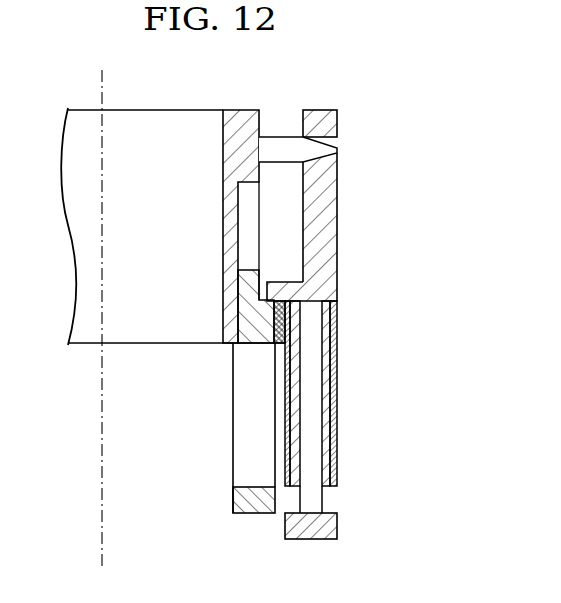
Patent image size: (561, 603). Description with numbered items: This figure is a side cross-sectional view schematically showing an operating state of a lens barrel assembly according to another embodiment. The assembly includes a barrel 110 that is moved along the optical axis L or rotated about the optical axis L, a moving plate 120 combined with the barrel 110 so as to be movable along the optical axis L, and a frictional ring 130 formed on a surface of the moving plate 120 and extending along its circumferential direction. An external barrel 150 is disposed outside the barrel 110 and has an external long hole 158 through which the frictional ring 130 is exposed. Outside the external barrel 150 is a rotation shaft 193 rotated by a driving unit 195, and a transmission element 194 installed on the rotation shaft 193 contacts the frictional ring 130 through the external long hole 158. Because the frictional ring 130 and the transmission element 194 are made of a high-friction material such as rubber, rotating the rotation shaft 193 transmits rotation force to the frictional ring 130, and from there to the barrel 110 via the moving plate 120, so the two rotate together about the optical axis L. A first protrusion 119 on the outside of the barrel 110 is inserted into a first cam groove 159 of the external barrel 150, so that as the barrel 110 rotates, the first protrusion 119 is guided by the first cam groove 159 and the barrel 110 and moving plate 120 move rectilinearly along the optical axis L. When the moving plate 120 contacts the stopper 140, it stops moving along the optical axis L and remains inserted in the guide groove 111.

The barrel 110 is at (248, 118).
The guide groove 111 is at (250, 186).
The first protrusion 119 is at (328, 148).
The moving plate 120 is at (232, 346).
The frictional ring 130 is at (285, 321).
The stopper 140 is at (286, 288).
The external barrel 150 is at (336, 217).
The external long hole 158 is at (252, 484).
The first cam groove 159 is at (312, 153).
The rotation shaft 193 is at (312, 412).
The transmission element 194 is at (333, 372).
The driving unit 195 is at (330, 522).
The optical axis L is at (102, 525).